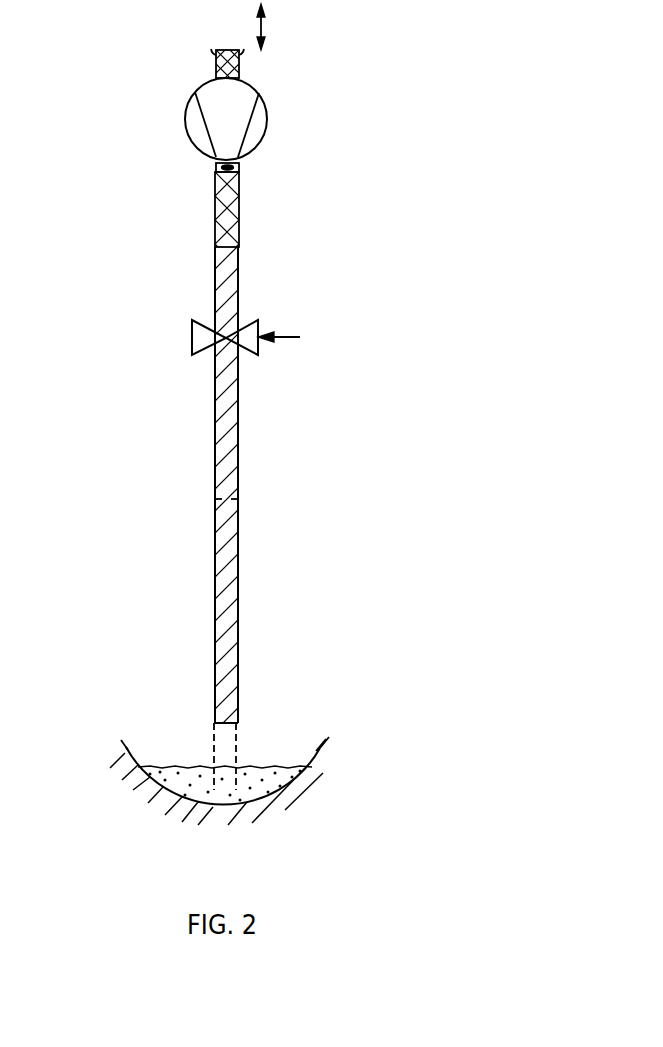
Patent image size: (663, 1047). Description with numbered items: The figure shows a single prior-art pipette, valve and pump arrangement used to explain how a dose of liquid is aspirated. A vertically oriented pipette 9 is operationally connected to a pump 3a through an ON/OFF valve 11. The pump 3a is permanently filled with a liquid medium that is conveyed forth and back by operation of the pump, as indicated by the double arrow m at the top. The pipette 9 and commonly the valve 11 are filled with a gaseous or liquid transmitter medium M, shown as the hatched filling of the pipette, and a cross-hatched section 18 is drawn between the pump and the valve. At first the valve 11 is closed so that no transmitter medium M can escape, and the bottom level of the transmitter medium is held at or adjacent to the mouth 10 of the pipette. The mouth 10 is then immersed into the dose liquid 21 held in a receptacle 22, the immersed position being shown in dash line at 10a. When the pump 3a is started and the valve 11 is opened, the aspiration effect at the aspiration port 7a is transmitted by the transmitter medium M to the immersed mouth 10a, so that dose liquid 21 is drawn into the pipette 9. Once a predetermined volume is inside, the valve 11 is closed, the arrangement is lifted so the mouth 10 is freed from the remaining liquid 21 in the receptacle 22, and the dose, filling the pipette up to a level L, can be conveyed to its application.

The double arrow m is at (275, 27).
The pump 3a is at (268, 121).
The aspiration port 7a is at (240, 166).
The filter section 18 is at (222, 202).
The pipette 9 is at (260, 499).
The transmitter medium M is at (228, 603).
The level L is at (212, 492).
The ON/OFF valve 11 is at (192, 334).
The mouth 10 is at (238, 727).
The immersed mouth of the pipette 10a is at (220, 786).
The dose liquid 21 is at (296, 783).
The receptacle 22 is at (127, 758).